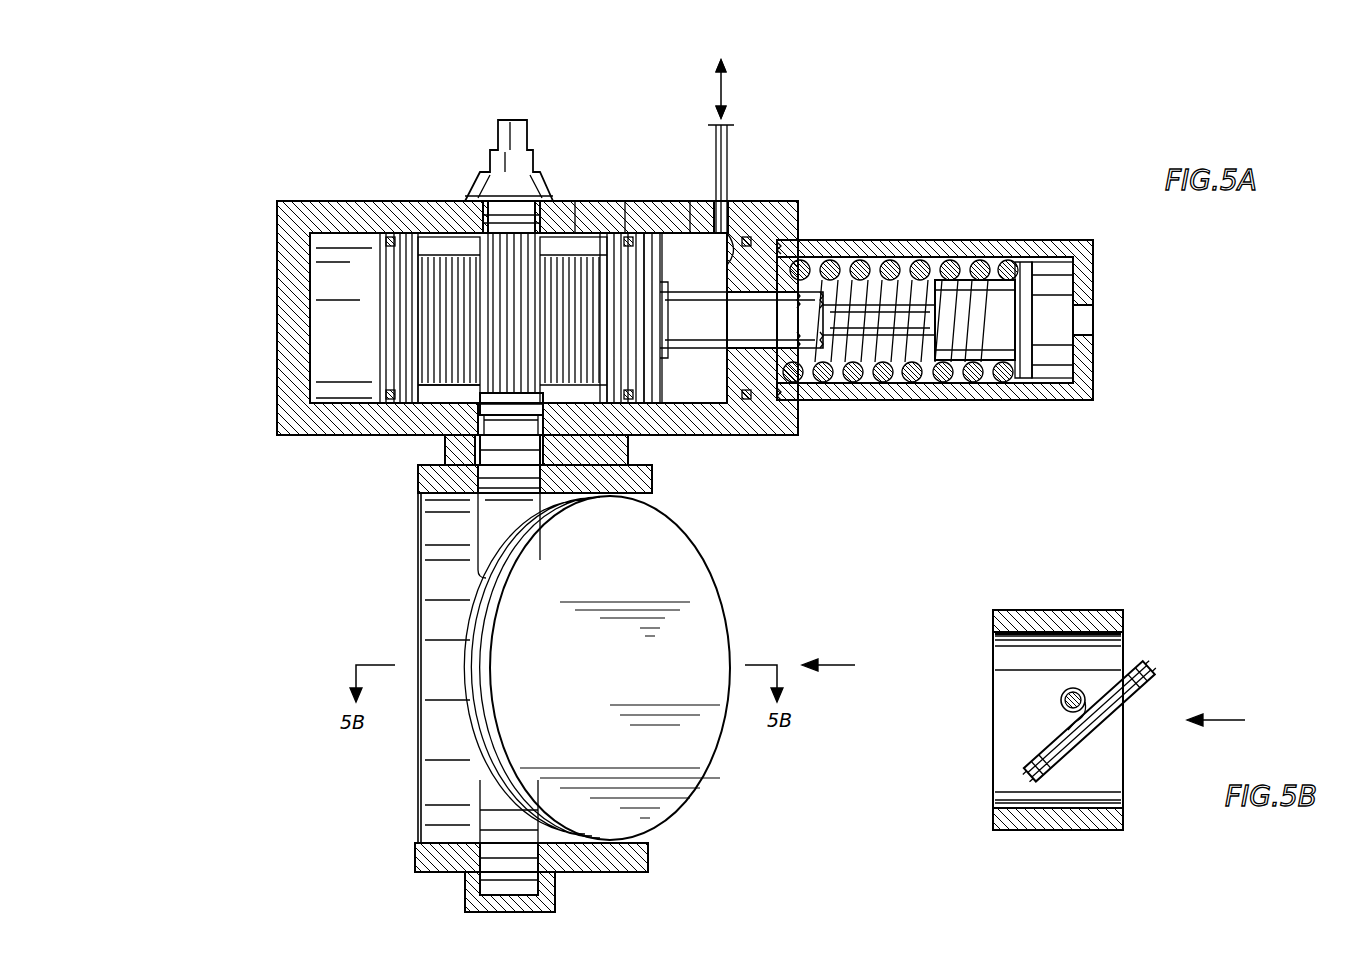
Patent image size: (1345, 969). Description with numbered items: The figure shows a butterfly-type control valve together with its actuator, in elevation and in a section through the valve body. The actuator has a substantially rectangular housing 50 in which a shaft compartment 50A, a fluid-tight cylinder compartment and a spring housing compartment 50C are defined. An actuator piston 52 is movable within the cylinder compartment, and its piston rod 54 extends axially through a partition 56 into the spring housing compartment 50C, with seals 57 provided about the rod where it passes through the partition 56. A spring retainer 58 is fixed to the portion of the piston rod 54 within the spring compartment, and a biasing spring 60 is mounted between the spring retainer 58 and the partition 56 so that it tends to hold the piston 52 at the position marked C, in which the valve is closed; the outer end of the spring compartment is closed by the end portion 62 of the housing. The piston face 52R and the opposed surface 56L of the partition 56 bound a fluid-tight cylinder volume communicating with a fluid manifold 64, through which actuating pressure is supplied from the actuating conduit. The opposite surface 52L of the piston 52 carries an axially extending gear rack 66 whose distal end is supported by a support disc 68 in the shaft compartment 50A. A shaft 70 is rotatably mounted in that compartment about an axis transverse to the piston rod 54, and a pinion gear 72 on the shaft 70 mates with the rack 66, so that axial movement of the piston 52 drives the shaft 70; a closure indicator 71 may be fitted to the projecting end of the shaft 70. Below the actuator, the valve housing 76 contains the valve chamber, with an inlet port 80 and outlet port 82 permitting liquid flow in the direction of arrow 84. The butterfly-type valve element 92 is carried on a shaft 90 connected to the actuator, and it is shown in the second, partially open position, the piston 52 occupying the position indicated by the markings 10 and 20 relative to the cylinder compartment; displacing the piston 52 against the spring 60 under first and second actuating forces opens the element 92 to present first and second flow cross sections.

In FIG. 5A, the housing section 10 is at (583, 224).
In FIG. 5A, the housing section 20 is at (632, 224).
In FIG. 5A, the piston position C is at (690, 224).
In FIG. 5A, the housing 50 is at (537, 234).
In FIG. 5A, the shaft compartment 50A is at (337, 392).
In FIG. 5A, the spring housing compartment 50C is at (1052, 378).
In FIG. 5A, the actuator piston 52 is at (663, 400).
In FIG. 5A, the piston surface 52L is at (600, 235).
In FIG. 5A, the piston face 52R is at (662, 243).
In FIG. 5A, the piston rod 54 is at (712, 345).
In FIG. 5A, the partition 56 is at (941, 325).
In FIG. 5A, the partition surface 56L is at (728, 250).
In FIG. 5A, the seals 57 is at (747, 404).
In FIG. 5A, the spring retainer 58 is at (1020, 265).
In FIG. 5A, the biasing spring 60 is at (953, 258).
In FIG. 5A, the end cap 62 is at (1093, 288).
In FIG. 5A, the fluid manifold 64 is at (728, 158).
In FIG. 5A, the gear rack 66 is at (442, 268).
In FIG. 5A, the support disc 68 is at (446, 238).
In FIG. 5A, the shaft 70 is at (480, 392).
In FIG. 5A, the closure indicator 71 is at (482, 185).
In FIG. 5A, the pinion gear 72 is at (485, 382).
In FIG. 5A, the housing 76 is at (642, 872).
In FIG. 5B, the housing 76 is at (1060, 610).
In FIG. 5B, the valve inlet port 80 is at (1122, 645).
In FIG. 5B, the outlet port 82 is at (1010, 637).
In FIG. 5A, the reference arrow 84 is at (840, 665).
In FIG. 5B, the reference arrow 84 is at (1240, 720).
In FIG. 5A, the shaft 90 is at (497, 440).
In FIG. 5B, the shaft 90 is at (1060, 702).
In FIG. 5A, the butterfly-type valve element 92 is at (710, 722).
In FIG. 5B, the butterfly-type valve element 92 is at (1152, 698).